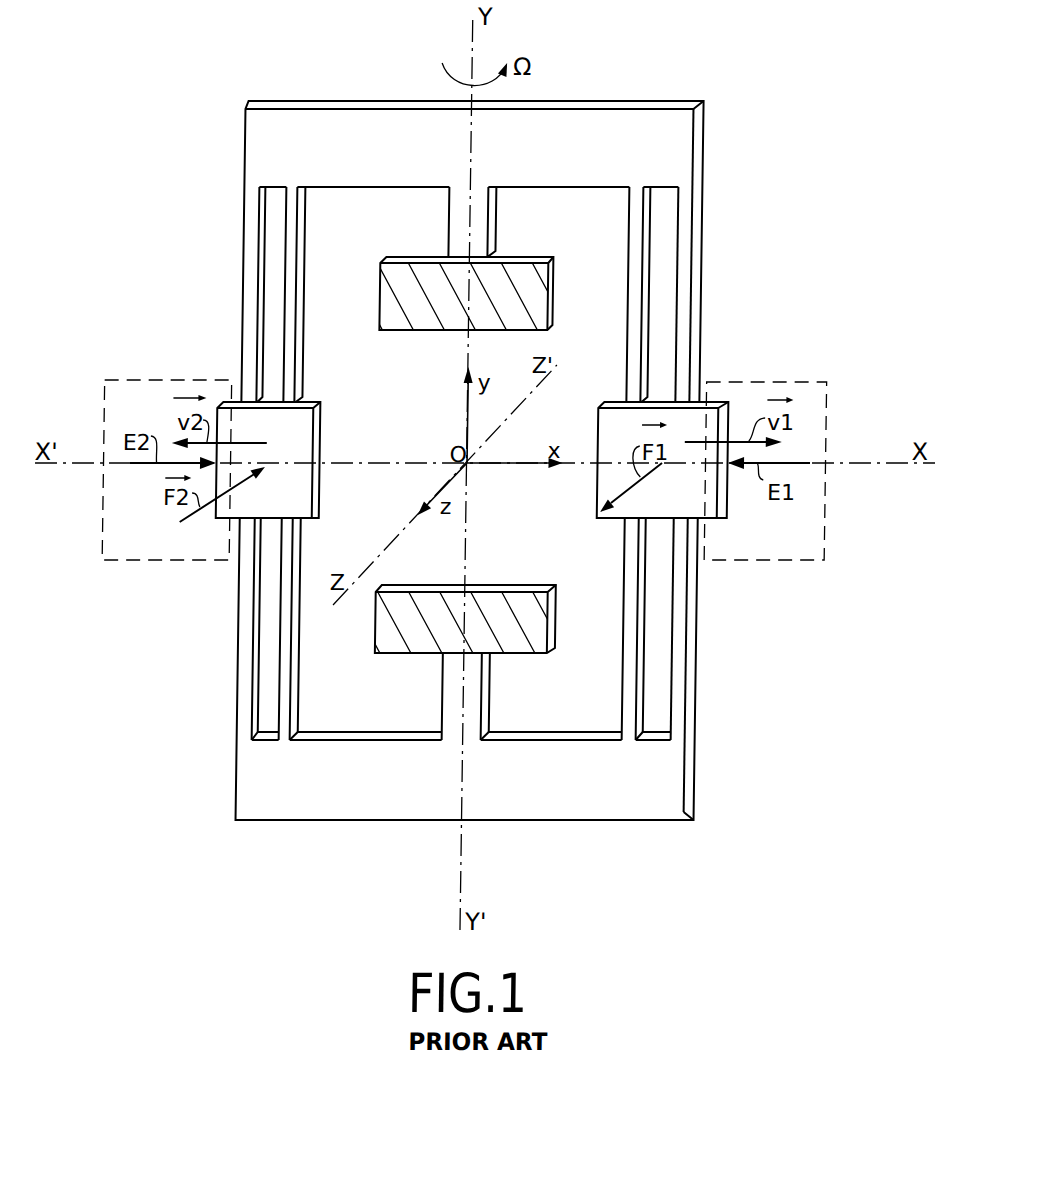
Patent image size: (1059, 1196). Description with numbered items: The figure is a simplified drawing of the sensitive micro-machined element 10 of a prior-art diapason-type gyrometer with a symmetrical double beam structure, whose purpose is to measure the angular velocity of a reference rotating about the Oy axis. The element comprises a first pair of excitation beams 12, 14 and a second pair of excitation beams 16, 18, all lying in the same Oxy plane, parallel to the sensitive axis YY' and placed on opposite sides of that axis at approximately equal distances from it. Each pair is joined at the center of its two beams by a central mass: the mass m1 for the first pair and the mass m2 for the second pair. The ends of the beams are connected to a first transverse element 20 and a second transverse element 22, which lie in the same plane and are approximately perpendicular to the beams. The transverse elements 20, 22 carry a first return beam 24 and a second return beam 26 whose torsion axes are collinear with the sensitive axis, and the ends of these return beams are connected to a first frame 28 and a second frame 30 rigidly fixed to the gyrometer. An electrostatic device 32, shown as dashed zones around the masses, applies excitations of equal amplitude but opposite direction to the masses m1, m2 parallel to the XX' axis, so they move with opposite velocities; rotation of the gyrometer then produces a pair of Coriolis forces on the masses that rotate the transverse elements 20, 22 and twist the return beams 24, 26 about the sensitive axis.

The sensitive micro-machined element 10 is at (684, 60).
The excitation beam 12 is at (643, 337).
The excitation beam 14 is at (688, 342).
The excitation beam 16 is at (296, 276).
The excitation beam 18 is at (257, 267).
The first transverse element 20 is at (335, 127).
The second transverse element 22 is at (344, 808).
The first return beam 24 is at (493, 237).
The second return beam 26 is at (495, 710).
The first frame 28 is at (429, 318).
The second frame 30 is at (539, 590).
The electrostatic device 32 is at (158, 377).
The mass m1 is at (619, 427).
The mass m2 is at (303, 431).